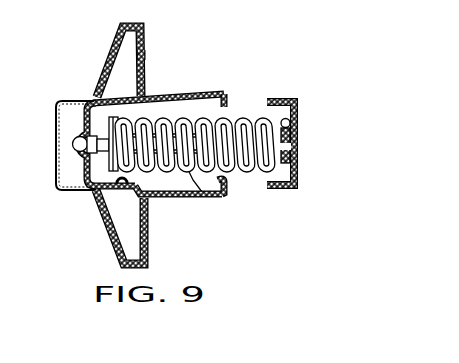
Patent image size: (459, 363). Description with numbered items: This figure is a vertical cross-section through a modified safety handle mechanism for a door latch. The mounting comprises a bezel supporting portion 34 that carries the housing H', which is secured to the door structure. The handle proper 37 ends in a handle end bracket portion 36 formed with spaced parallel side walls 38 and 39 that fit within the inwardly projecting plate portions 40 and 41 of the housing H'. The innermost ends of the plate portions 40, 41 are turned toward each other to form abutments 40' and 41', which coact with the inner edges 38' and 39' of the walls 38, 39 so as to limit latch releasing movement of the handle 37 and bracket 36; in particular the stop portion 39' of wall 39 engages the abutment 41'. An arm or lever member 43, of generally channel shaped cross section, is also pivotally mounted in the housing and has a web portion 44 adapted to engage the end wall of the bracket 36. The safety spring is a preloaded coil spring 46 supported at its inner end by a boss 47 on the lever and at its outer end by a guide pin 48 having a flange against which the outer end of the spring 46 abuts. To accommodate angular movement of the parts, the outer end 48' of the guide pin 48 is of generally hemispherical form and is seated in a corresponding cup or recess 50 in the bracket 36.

The bezel supporting portion 34 is at (110, 43).
The housing H' is at (159, 44).
The handle end bracket portion 36 is at (83, 183).
The handle proper 37 is at (56, 170).
The side wall 38 is at (75, 97).
The inner edge 38' is at (137, 78).
The side wall 39 is at (121, 199).
The inner edge 39' is at (161, 210).
The plate portion 40 is at (194, 75).
The abutment 40' is at (202, 107).
The plate portion 41 is at (195, 195).
The abutment 41' is at (244, 183).
The arm or lever member 43 is at (282, 97).
The web portion 44 is at (299, 106).
The preloaded coil spring 46 is at (245, 117).
The boss 47 is at (290, 146).
The guide pin 48 is at (217, 214).
The outer end 48' is at (108, 144).
The cup or recess 50 is at (73, 130).